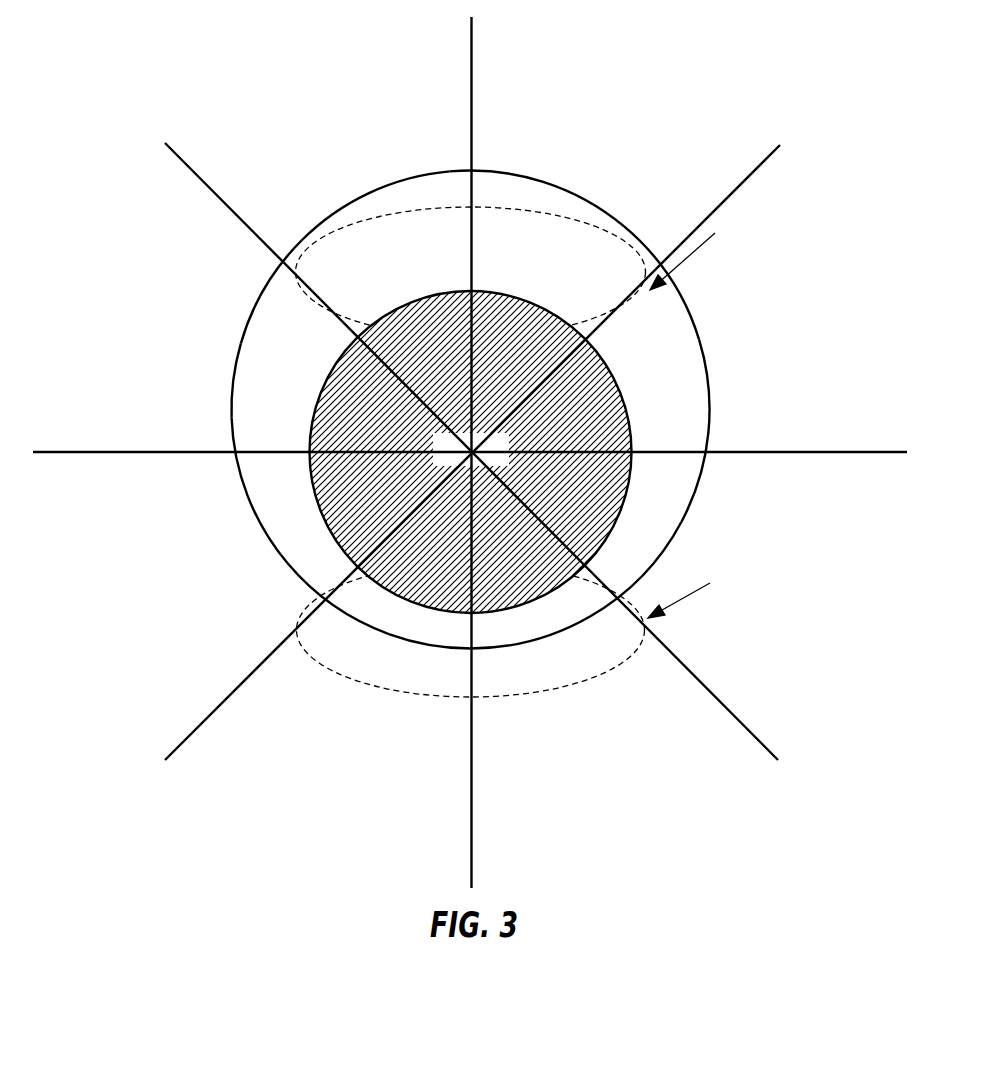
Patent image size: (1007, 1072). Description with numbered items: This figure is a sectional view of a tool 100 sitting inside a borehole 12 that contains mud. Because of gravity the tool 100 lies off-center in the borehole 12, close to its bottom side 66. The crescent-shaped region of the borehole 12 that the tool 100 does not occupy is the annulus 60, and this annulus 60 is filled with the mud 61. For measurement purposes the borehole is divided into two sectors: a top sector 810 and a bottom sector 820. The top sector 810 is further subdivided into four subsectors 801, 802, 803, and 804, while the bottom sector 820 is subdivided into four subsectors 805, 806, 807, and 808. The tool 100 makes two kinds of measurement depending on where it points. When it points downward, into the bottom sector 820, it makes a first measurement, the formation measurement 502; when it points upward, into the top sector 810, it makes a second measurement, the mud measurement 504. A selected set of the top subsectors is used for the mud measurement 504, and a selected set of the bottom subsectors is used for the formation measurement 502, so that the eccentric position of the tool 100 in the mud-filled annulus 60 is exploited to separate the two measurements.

The borehole 12 is at (232, 381).
The annulus 60 is at (255, 325).
The mud 61 is at (697, 364).
The bottom side 66 is at (547, 637).
The tool 100 is at (319, 516).
The formation measurement 502 is at (781, 611).
The mud measurement 504 is at (784, 264).
The subsector 801 is at (236, 434).
The subsector 802 is at (348, 228).
The subsector 803 is at (538, 185).
The subsector 804 is at (712, 430).
The subsector 805 is at (675, 508).
The subsector 806 is at (497, 630).
The subsector 807 is at (402, 623).
The subsector 808 is at (258, 469).
The top sector 810 is at (442, 232).
The bottom sector 820 is at (441, 672).